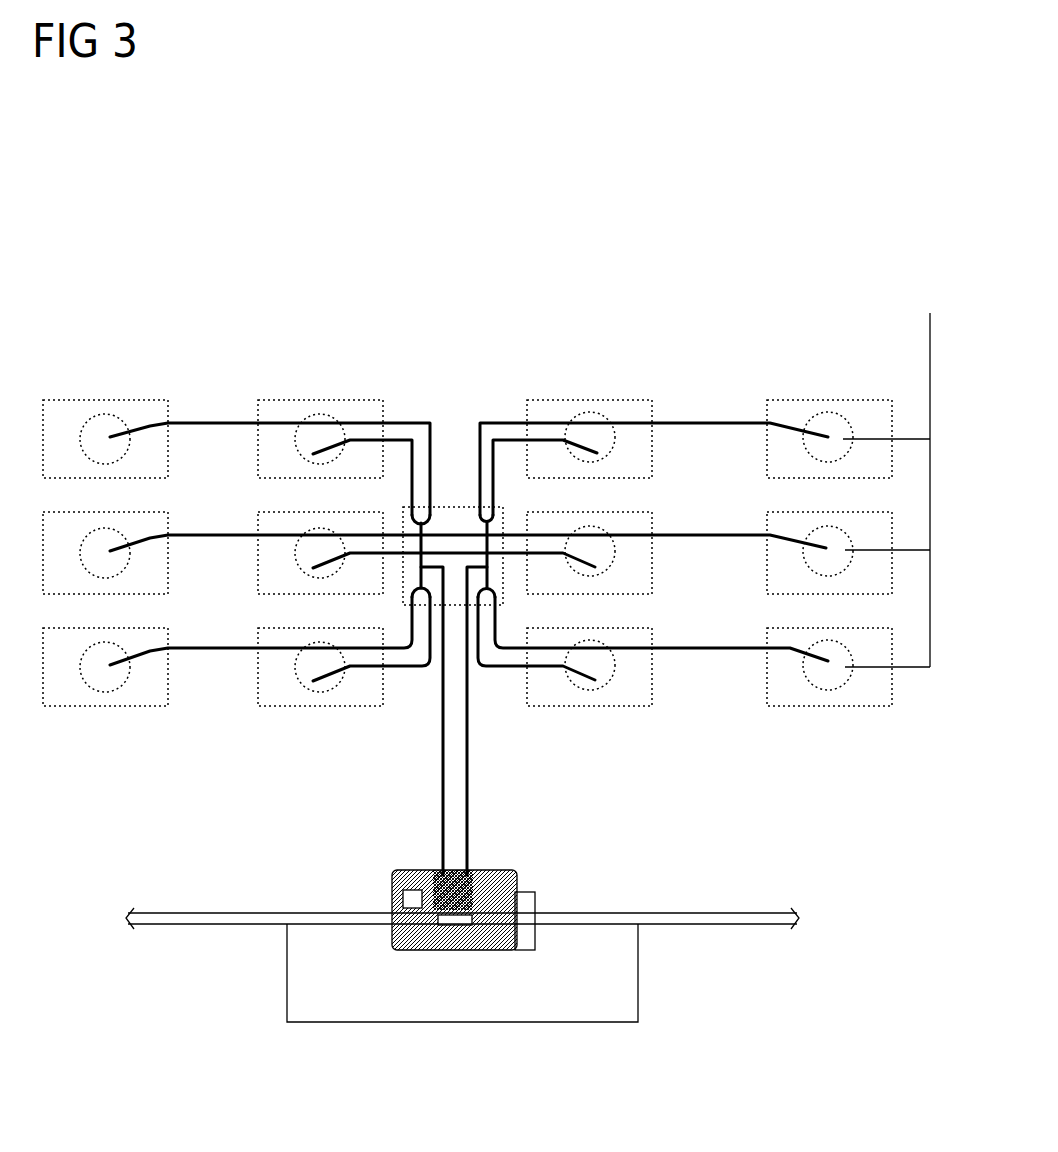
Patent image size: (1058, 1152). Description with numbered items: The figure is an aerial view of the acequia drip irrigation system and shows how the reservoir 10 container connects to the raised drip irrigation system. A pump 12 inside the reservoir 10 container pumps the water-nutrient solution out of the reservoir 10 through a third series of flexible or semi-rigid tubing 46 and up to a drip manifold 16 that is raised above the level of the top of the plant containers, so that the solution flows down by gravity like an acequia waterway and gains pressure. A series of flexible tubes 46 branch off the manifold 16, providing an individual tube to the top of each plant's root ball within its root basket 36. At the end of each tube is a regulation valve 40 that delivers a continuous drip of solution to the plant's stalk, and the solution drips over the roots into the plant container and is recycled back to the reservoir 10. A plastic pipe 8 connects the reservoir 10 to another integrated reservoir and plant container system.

The plastic pipe 8 is at (638, 1022).
The reservoir 10 is at (457, 930).
The pump 12 is at (535, 950).
The drip manifold 16 is at (455, 507).
The root basket 36 is at (895, 471).
The regulation valve 40 is at (395, 895).
The flexible tubing 46 is at (711, 423).